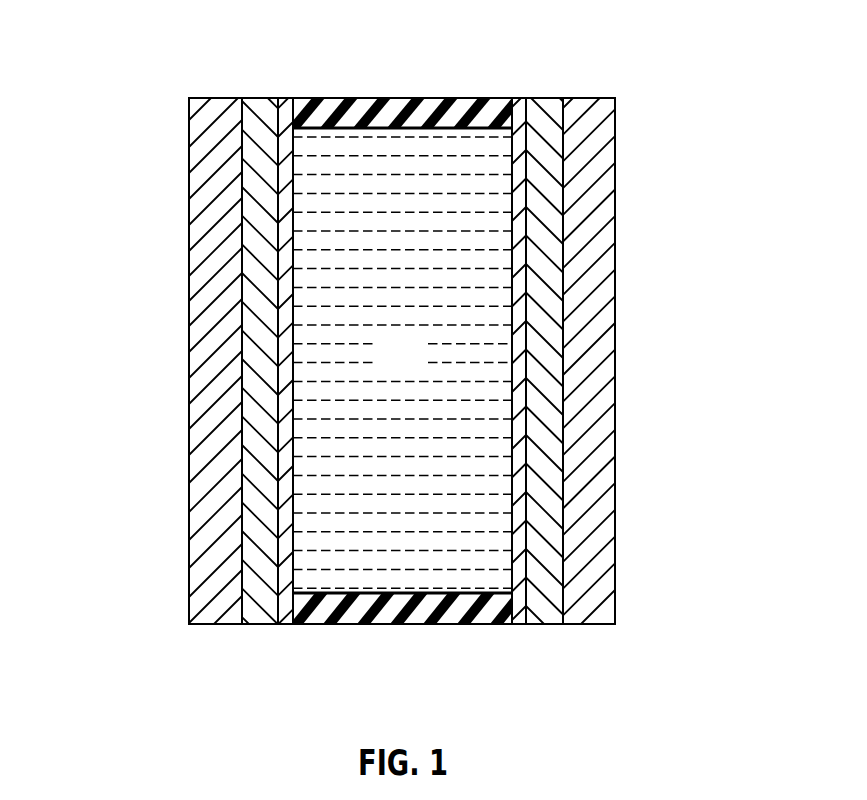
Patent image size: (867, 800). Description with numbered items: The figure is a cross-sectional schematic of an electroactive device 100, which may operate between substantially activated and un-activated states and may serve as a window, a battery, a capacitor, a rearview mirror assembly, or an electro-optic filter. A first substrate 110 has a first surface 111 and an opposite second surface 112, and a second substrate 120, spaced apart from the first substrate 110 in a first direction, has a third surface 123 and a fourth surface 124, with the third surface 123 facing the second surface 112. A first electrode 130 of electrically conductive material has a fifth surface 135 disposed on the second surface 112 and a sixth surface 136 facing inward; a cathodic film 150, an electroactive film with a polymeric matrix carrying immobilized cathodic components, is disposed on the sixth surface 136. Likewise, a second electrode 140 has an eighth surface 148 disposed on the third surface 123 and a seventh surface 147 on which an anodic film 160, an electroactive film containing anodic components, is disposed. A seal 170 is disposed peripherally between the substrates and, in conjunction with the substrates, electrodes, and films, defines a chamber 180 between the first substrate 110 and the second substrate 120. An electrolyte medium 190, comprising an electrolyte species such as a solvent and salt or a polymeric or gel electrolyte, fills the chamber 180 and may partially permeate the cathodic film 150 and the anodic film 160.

The electroactive device 100 is at (155, 53).
The first substrate 110 is at (212, 230).
The first surface 111 is at (189, 153).
The second surface 112 is at (240, 293).
The second substrate 120 is at (588, 230).
The third surface 123 is at (565, 293).
The fourth surface 124 is at (615, 152).
The first electrode 130 is at (260, 623).
The fifth surface 135 is at (240, 377).
The sixth surface 136 is at (278, 433).
The second electrode 140 is at (545, 623).
The seventh surface 147 is at (528, 435).
The eighth surface 148 is at (563, 375).
The cathodic film 150 is at (285, 104).
The anodic film 160 is at (520, 108).
The seal 170 is at (415, 623).
The chamber 180 is at (425, 363).
The electrolyte medium 190 is at (463, 507).